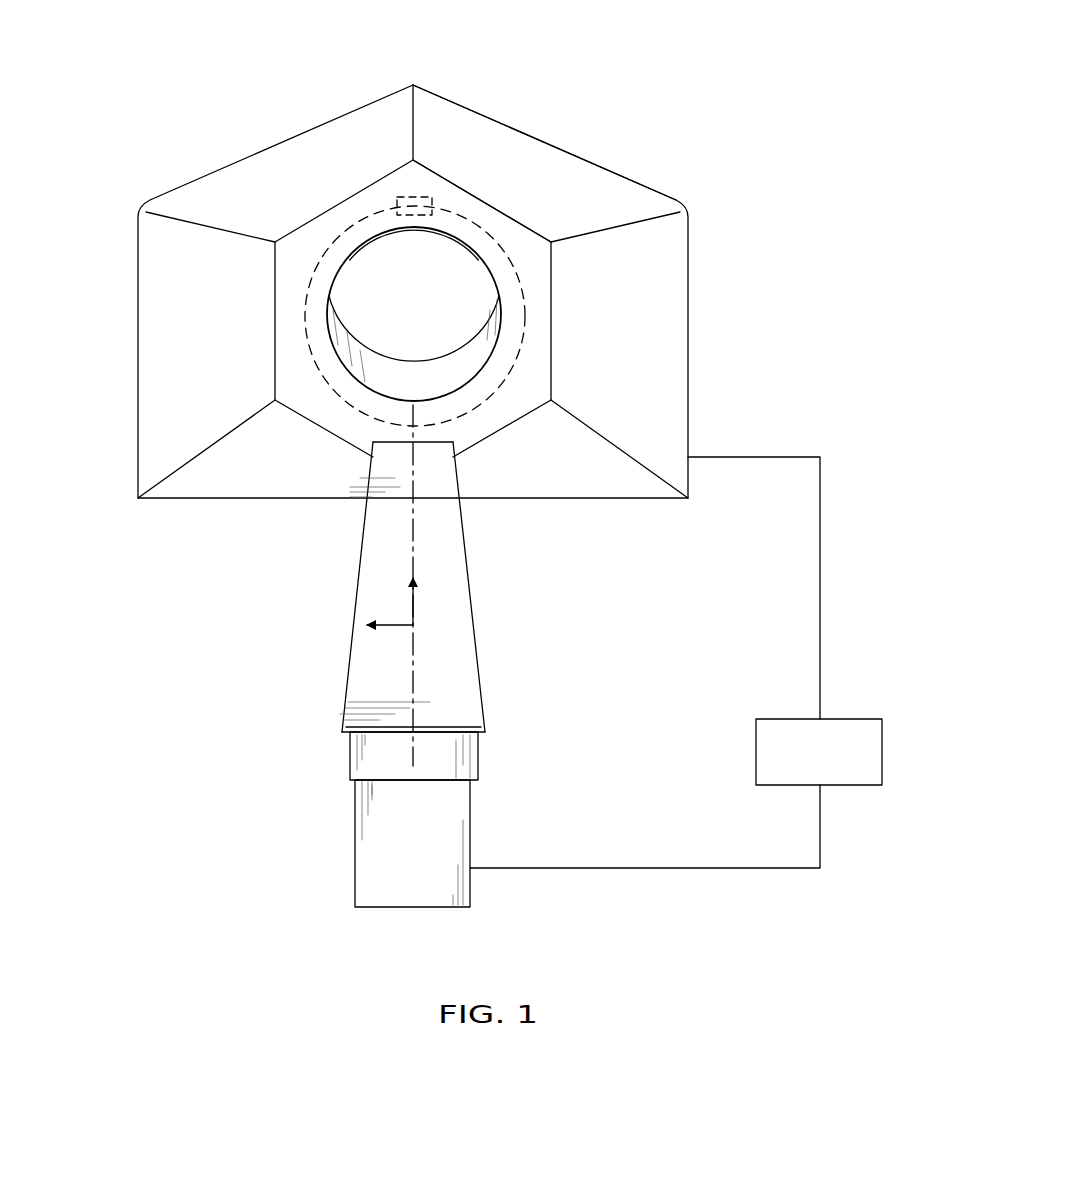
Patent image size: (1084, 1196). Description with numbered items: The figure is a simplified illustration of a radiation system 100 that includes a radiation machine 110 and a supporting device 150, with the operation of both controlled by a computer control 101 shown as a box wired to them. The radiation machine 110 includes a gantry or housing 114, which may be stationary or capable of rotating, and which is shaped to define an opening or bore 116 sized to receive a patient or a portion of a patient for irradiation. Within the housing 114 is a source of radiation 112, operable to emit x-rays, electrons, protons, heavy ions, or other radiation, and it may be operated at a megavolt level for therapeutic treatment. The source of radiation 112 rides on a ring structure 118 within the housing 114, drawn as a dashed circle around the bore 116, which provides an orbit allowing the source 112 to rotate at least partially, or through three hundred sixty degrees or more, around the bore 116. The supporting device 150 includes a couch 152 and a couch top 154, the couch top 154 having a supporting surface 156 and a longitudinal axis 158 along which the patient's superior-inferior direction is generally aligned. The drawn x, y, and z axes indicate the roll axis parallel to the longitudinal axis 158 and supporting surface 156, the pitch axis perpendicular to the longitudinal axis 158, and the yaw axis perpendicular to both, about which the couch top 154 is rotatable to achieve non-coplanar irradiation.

The radiation system 100 is at (128, 66).
The computer control 101 is at (882, 752).
The radiation machine 110 is at (692, 341).
The source of radiation 112 is at (425, 197).
The gantry or housing 114 is at (540, 142).
The bore 116 is at (350, 275).
The ring structure 118 is at (330, 243).
The supporting device 150 is at (322, 743).
The couch 152 is at (355, 845).
The couch top 154 is at (360, 568).
The supporting surface 156 is at (455, 605).
The longitudinal axis 158 is at (414, 657).